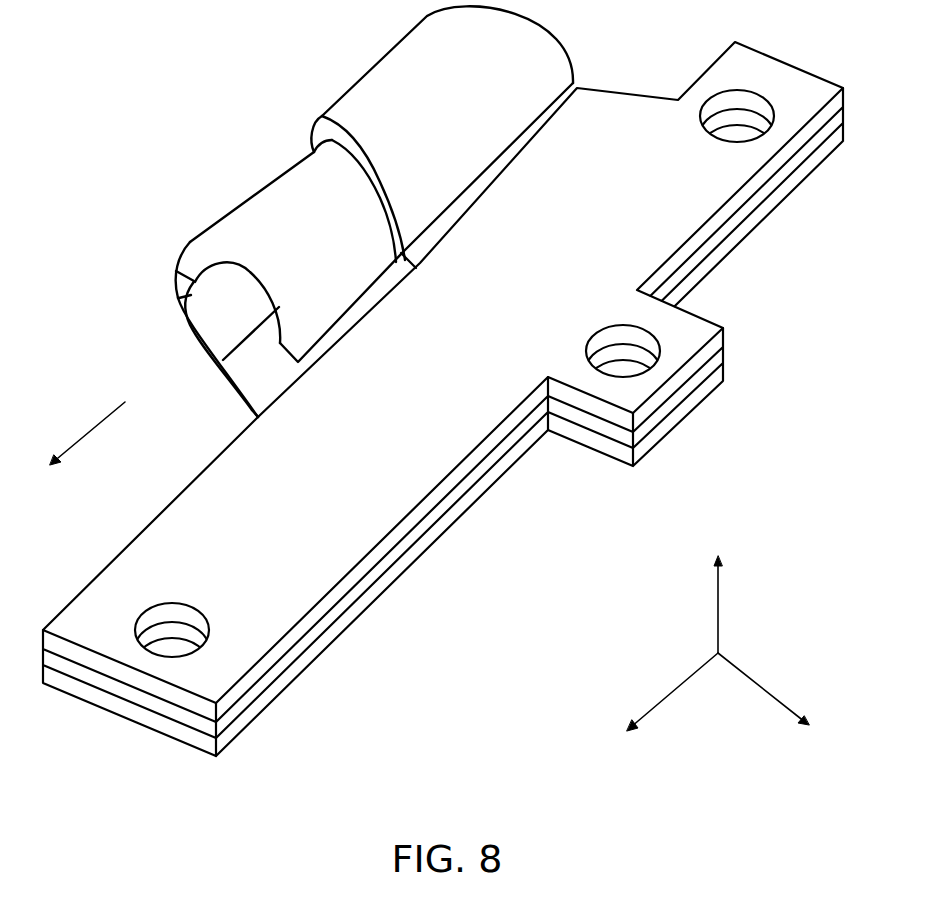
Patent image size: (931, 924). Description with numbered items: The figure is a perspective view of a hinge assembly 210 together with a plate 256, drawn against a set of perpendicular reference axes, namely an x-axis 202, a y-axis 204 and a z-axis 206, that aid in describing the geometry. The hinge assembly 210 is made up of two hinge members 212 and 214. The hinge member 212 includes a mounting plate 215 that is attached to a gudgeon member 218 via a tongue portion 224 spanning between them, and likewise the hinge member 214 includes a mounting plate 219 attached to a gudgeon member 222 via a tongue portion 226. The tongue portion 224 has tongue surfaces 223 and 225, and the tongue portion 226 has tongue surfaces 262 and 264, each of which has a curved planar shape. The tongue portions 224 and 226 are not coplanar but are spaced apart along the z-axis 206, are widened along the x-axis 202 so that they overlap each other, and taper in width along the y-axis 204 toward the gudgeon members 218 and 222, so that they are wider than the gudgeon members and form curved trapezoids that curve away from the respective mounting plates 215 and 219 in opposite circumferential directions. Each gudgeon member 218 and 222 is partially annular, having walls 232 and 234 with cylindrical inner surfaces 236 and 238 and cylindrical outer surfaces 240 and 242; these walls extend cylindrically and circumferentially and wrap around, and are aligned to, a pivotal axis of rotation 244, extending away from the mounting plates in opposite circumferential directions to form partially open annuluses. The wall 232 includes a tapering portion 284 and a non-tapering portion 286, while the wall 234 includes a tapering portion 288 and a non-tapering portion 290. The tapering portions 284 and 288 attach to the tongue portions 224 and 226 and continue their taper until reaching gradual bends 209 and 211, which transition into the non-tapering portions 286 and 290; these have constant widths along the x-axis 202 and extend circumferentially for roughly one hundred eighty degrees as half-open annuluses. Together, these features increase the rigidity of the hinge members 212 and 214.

The x-axis 202 is at (667, 697).
The y-axis 204 is at (768, 690).
The z-axis 206 is at (722, 591).
The gradual bend 209 is at (318, 150).
The hinge assembly 210 is at (150, 79).
The gradual bend 211 is at (178, 280).
The hinge member 212 is at (492, 338).
The hinge member 214 is at (491, 480).
The mounting plate 215 is at (432, 388).
The gudgeon member 218 is at (352, 82).
The mounting plate 219 is at (396, 582).
The gudgeon member 222 is at (231, 206).
The tongue surface 223 is at (512, 165).
The tongue portion 224 is at (466, 207).
The tongue surface 225 is at (580, 86).
The tongue portion 226 is at (252, 403).
The wall 232 is at (352, 107).
The wall 234 is at (219, 222).
The cylindrical inner surface 236 is at (341, 153).
The cylindrical inner surface 238 is at (210, 323).
The cylindrical outer surface 240 is at (394, 98).
The cylindrical outer surface 242 is at (268, 224).
The pivotal axis of rotation 244 is at (92, 423).
The plate 256 is at (434, 520).
The tongue surface 262 is at (277, 378).
The tongue surface 264 is at (214, 383).
The tapering portion 284 is at (182, 294).
The non-tapering portion 286 is at (278, 257).
The tapering portion 288 is at (430, 62).
The non-tapering portion 290 is at (313, 158).